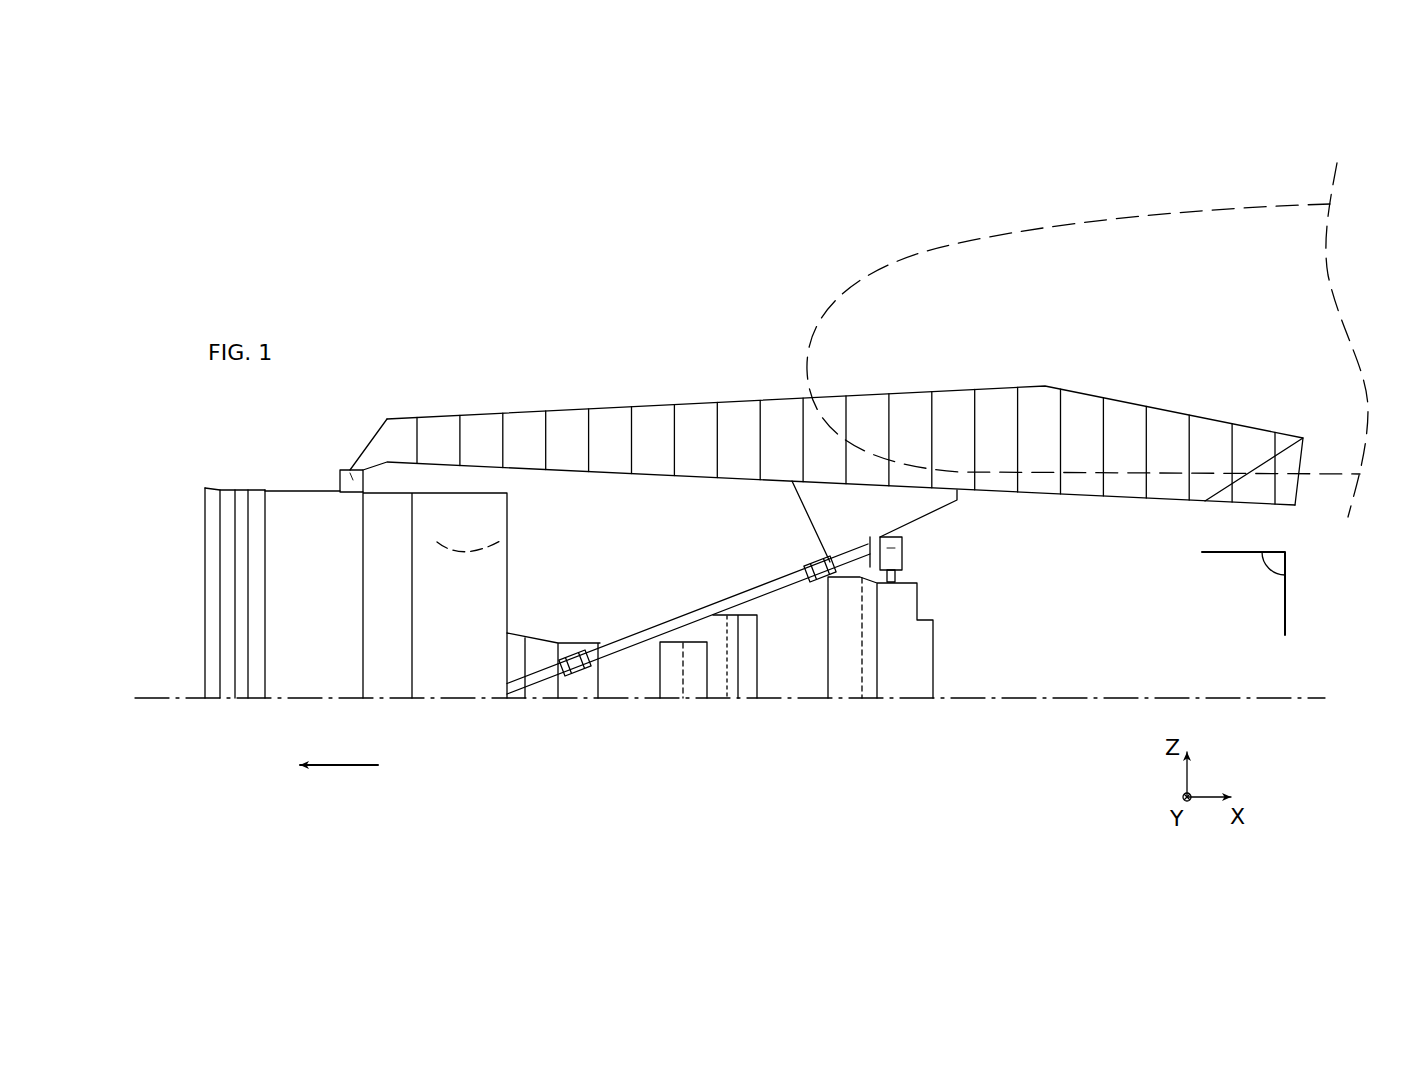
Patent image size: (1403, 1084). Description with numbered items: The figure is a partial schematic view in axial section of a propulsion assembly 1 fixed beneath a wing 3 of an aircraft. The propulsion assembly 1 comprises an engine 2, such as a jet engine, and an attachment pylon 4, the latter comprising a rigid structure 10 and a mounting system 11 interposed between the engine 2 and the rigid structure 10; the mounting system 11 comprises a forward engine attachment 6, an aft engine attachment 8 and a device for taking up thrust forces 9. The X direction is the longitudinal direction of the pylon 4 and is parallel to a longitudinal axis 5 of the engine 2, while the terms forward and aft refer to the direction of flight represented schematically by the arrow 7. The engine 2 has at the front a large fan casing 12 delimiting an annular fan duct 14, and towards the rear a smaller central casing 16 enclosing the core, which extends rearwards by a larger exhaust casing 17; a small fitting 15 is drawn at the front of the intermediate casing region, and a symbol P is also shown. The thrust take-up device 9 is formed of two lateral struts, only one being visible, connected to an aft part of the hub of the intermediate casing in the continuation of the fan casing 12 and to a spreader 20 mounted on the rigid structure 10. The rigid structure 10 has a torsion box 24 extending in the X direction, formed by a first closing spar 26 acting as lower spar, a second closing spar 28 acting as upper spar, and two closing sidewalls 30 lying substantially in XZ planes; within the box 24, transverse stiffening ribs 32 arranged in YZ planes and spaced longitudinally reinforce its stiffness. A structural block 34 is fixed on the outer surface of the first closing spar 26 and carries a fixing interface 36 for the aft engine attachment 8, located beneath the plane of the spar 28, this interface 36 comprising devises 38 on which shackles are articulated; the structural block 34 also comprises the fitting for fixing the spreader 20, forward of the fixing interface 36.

The propulsion assembly 1 is at (482, 769).
The engine 2 is at (196, 491).
The wing 3 is at (1062, 227).
The attachment pylon 4 is at (892, 356).
The longitudinal axis 5 is at (1162, 697).
The forward engine attachment 6 is at (353, 480).
The arrow 7 is at (335, 766).
The aft engine attachment 8 is at (878, 584).
The device for taking up thrust forces 9 is at (688, 655).
The rigid structure 10 is at (802, 316).
The mounting system 11 is at (757, 770).
The fan casing 12 is at (203, 628).
The annular fan duct 14 is at (507, 536).
The front mount fitting 15 is at (370, 447).
The central casing 16 is at (580, 640).
The exhaust casing 17 is at (917, 583).
The spreader 20 is at (846, 570).
The box 24 is at (704, 396).
The first closing spar 26 is at (612, 478).
The second closing spar 28 is at (503, 412).
The closing sidewalls 30 is at (622, 406).
The transverse stiffening ribs 32 is at (803, 458).
The structural block 34 is at (798, 495).
The fixing interface 36 is at (911, 543).
The devises 38 is at (903, 558).
The reference plane P is at (1283, 563).